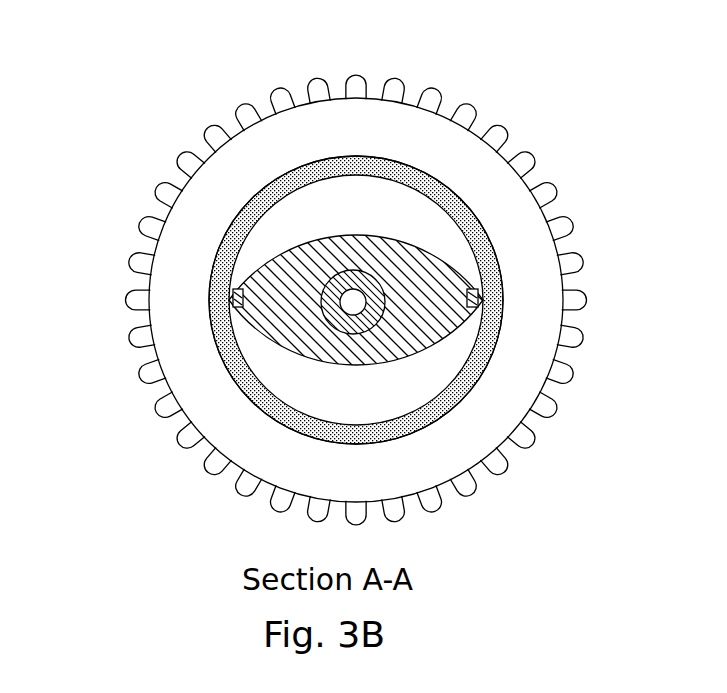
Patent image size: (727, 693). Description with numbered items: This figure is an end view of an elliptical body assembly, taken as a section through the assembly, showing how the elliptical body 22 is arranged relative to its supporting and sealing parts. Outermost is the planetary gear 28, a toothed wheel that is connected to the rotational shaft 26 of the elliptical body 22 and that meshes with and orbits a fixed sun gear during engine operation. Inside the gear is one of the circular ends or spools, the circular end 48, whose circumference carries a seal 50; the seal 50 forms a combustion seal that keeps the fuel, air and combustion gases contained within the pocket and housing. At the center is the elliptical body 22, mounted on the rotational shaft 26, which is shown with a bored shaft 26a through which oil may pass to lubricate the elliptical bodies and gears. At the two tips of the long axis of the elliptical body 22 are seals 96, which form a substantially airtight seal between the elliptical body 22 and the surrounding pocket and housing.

The elliptical body 22 is at (447, 268).
The rotational shaft 26 is at (366, 318).
The bored shaft 26a is at (351, 303).
The planetary gear 28 is at (518, 277).
The circular end 48 is at (432, 178).
The seal 50 is at (345, 172).
The seal 96 is at (232, 298).